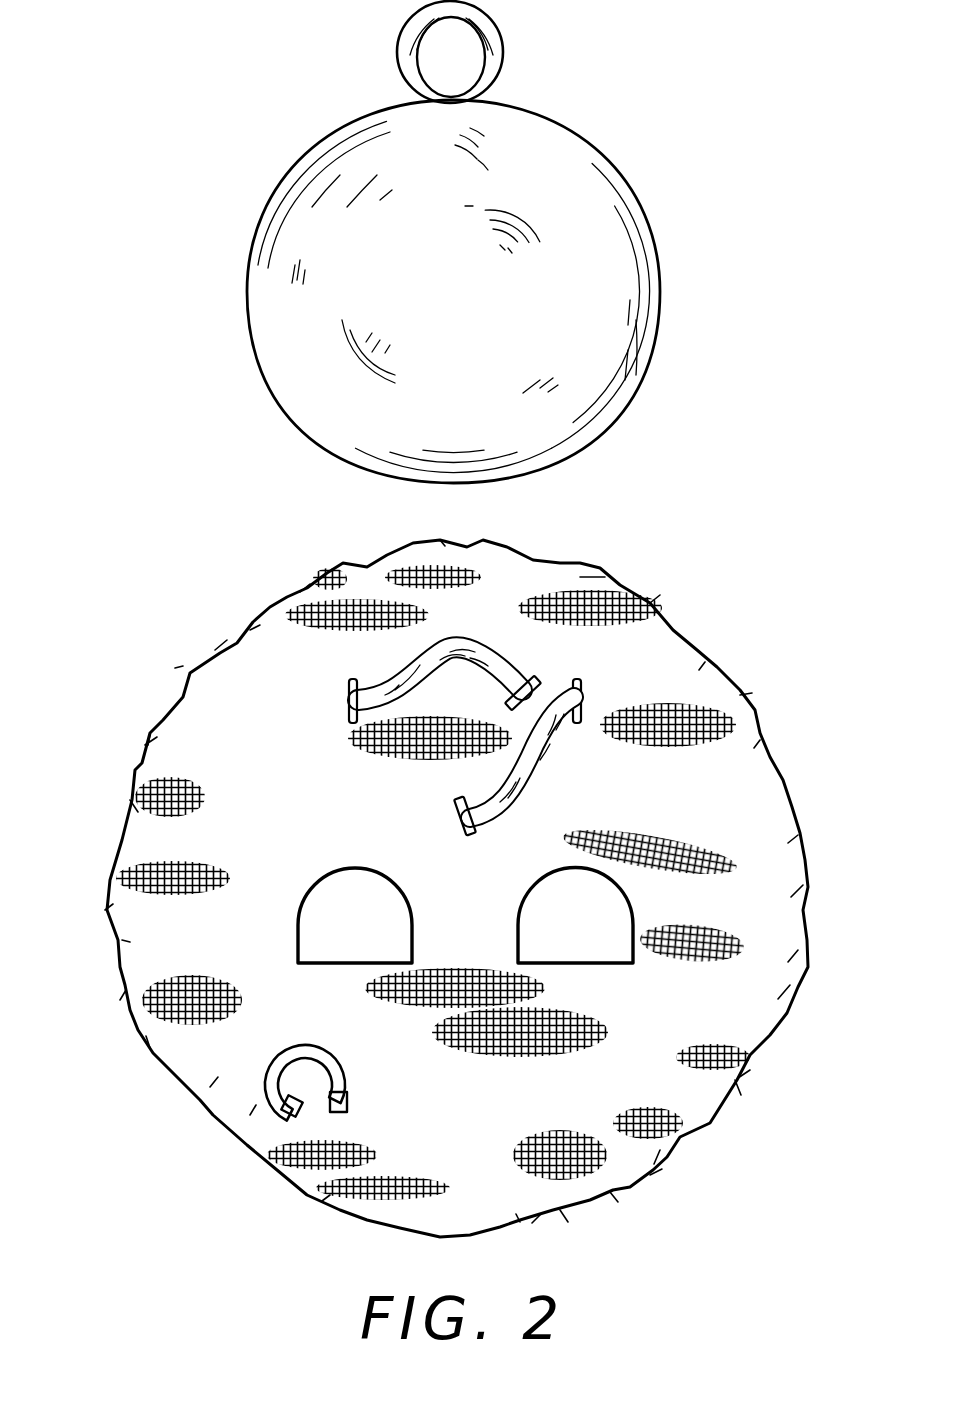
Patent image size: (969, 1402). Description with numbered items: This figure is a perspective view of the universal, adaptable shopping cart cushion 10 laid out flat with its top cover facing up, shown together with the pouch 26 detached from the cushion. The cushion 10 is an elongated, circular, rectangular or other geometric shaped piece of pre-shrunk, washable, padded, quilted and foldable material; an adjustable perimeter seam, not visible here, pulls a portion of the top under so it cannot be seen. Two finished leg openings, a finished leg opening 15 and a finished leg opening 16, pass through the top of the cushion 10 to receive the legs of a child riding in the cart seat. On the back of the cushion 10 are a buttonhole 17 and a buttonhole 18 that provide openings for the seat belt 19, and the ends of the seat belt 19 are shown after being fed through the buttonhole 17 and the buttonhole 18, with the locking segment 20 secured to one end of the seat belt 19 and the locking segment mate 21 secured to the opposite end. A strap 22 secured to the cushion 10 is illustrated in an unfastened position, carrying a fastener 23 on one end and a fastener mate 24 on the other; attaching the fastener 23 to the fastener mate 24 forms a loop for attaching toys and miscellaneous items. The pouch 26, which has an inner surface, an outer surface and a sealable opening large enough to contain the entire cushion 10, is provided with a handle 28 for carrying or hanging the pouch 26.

The universal, adaptable shopping cart cushion 10 is at (180, 644).
The finished leg opening 15 is at (591, 938).
The finished leg opening 16 is at (371, 938).
The buttonhole 17 is at (582, 690).
The buttonhole 18 is at (345, 700).
The seat belt 19 is at (545, 745).
The locking segment 20 is at (455, 812).
The locking segment mate 21 is at (527, 677).
The strap 22 is at (268, 1072).
The fastener 23 is at (350, 1110).
The fastener mate 24 is at (282, 1118).
The pouch 26 is at (660, 278).
The handle 28 is at (508, 42).